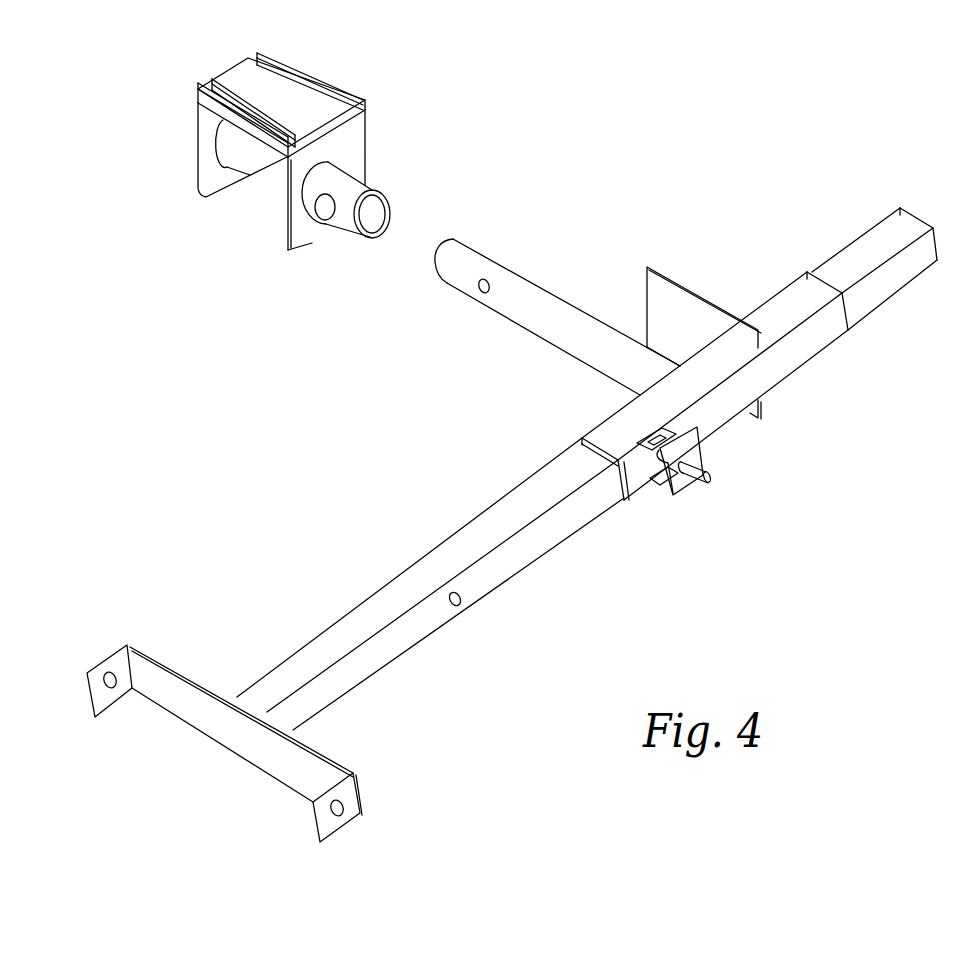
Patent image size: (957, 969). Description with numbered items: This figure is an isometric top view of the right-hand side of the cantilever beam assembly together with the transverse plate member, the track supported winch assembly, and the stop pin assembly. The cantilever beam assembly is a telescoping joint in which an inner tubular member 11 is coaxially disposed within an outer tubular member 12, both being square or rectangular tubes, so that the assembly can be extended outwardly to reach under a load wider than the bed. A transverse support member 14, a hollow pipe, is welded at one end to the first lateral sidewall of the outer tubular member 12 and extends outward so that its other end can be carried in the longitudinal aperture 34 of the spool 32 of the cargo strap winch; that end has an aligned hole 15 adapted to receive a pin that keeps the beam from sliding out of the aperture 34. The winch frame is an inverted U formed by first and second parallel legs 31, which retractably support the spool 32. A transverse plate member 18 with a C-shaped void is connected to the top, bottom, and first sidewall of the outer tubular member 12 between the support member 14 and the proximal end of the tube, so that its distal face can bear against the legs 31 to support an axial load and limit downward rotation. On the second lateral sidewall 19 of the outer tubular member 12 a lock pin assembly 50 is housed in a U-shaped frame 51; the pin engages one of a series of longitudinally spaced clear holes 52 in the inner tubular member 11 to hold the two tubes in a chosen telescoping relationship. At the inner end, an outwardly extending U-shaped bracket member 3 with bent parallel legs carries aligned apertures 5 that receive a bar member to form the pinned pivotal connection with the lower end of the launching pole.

The U-shaped bracket member 3 is at (308, 768).
The apertures 5 is at (110, 684).
The inner tubular member 11 is at (427, 577).
The outer tubular member 12 is at (622, 433).
The transverse support member 14 is at (517, 300).
The rod hole 15 is at (478, 288).
The transverse plate member 18 is at (668, 313).
The second lateral sidewall 19 is at (545, 532).
The legs 31 is at (207, 130).
The spool 32 is at (252, 163).
The longitudinal aperture 34 is at (367, 218).
The lock pin assembly 50 is at (708, 480).
The U-shaped frame 51 is at (697, 453).
The clear holes 52 is at (458, 603).